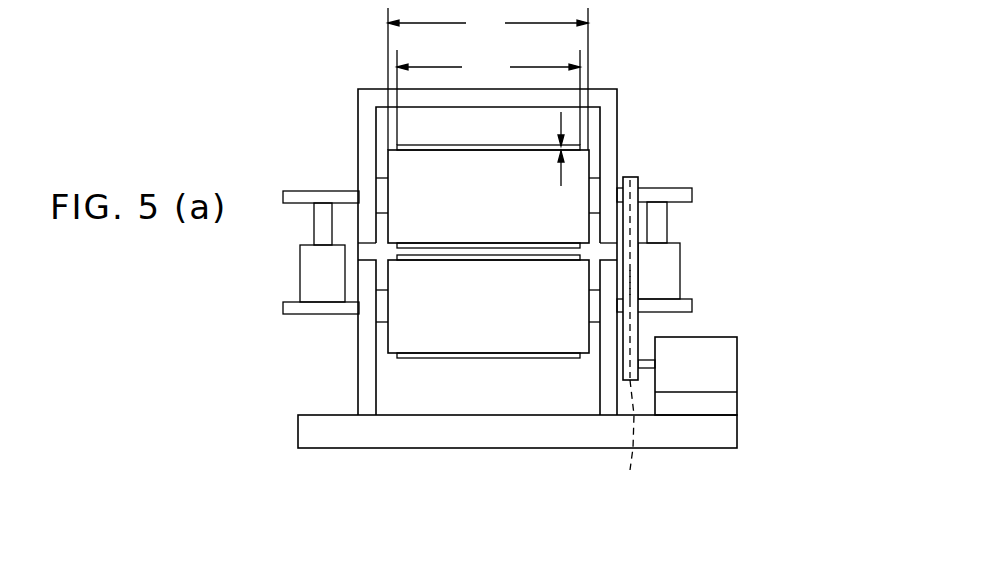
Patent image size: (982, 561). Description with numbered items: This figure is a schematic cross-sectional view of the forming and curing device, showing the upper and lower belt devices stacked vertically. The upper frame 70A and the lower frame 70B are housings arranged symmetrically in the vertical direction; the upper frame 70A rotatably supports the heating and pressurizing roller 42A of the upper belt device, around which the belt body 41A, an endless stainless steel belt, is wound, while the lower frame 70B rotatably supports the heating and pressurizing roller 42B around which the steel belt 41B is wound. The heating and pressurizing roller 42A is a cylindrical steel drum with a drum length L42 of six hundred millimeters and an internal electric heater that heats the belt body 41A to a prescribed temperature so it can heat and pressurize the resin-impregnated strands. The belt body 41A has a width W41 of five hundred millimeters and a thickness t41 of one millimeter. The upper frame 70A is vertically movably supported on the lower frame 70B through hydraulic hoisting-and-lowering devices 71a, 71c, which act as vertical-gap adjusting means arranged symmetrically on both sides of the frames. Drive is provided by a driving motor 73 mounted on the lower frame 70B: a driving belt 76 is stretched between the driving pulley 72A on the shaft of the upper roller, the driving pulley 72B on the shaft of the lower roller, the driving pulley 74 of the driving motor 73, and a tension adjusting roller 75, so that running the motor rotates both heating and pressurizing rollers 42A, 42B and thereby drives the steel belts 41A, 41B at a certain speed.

The upper frame 70A is at (349, 96).
The lower frame 70B is at (325, 462).
The belt body 41A is at (418, 244).
The steel belt 41B is at (495, 262).
The heating and pressurizing roller 42A is at (453, 163).
The heating and pressurizing roller 42B is at (443, 333).
The hoisting-and-lowering device 71c is at (273, 259).
The hoisting-and-lowering device 71a is at (705, 250).
The driving belt 76 is at (630, 237).
The driving pulley 72A is at (633, 178).
The driving pulley 72B is at (631, 286).
The driving motor 73 is at (752, 356).
The tension adjusting roller 75 is at (653, 339).
The driving pulley 74 is at (653, 339).
The drum length L42 is at (488, 79).
The width W41 is at (488, 97).
The thickness t41 is at (559, 146).